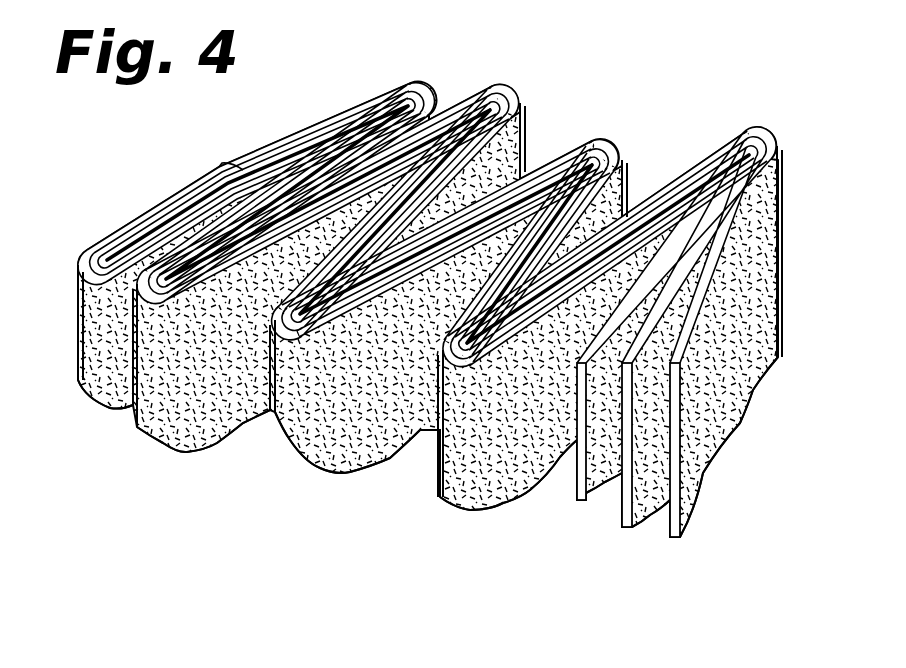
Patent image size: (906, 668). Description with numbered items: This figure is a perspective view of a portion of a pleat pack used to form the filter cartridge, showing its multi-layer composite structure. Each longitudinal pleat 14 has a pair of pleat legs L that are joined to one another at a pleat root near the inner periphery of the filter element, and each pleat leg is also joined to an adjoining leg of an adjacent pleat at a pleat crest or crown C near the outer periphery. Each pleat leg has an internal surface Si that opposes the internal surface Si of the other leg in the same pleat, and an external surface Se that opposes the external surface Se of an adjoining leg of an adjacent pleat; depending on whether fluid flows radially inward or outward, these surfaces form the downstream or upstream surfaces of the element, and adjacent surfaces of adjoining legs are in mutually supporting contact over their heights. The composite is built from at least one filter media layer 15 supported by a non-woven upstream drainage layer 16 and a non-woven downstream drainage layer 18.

The longitudinal pleat 14 is at (413, 313).
The pleat legs L is at (395, 150).
The internal surface Si is at (525, 167).
The external surface Se is at (212, 388).
The pleat crest C is at (130, 337).
The non-woven upstream drainage layer 16 is at (575, 495).
The filter media layer 15 is at (620, 525).
The non-woven downstream drainage layer 18 is at (668, 535).